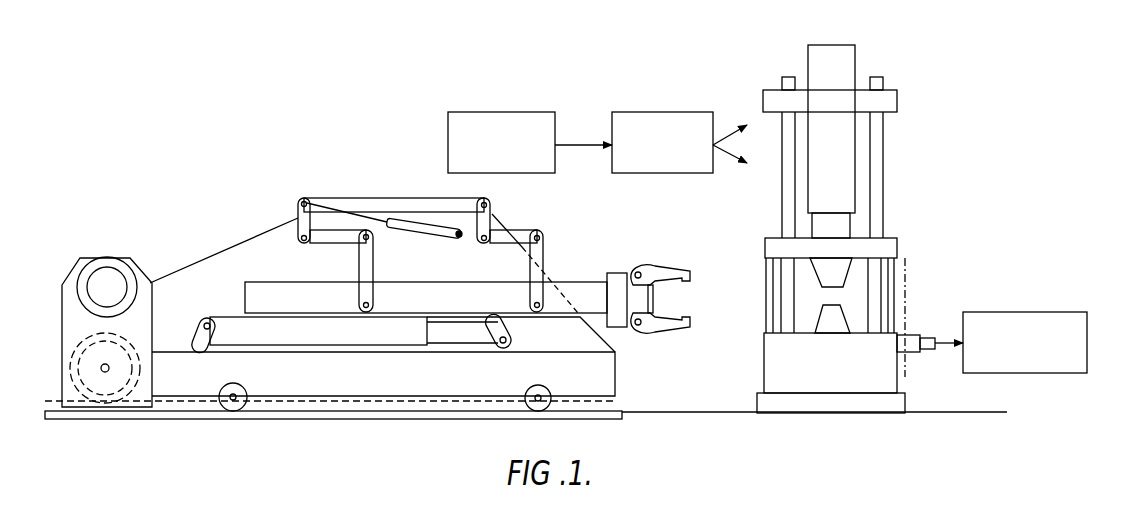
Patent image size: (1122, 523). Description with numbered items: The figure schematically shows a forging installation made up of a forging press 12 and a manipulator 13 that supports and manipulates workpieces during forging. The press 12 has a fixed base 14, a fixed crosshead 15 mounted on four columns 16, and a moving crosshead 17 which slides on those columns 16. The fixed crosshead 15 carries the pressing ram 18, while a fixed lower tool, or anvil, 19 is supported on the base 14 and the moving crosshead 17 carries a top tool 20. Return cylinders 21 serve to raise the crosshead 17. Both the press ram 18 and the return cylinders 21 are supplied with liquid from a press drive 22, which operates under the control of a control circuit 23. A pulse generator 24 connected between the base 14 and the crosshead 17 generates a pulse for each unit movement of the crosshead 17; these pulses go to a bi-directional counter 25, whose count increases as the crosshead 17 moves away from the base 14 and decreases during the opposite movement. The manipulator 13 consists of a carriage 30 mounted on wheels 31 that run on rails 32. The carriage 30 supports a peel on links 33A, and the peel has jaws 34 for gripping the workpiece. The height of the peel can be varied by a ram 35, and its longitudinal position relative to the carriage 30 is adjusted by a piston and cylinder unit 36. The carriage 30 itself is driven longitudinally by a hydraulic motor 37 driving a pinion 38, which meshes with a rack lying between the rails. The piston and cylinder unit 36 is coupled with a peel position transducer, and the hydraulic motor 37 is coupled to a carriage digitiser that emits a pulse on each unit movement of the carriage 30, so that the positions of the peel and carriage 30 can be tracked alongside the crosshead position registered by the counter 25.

The forging press 12 is at (823, 449).
The manipulator 13 is at (333, 432).
The fixed base 14 is at (823, 369).
The fixed crosshead 15 is at (892, 102).
The columns 16 is at (878, 172).
The moving crosshead 17 is at (892, 242).
The pressing ram 18 is at (820, 172).
The fixed lower tool 19 is at (822, 325).
The top tool 20 is at (822, 281).
The return cylinders 21 is at (766, 303).
The press drive 22 is at (663, 112).
The control circuit 23 is at (510, 112).
The pulse generator 24 is at (910, 338).
The bi-directional counter 25 is at (1027, 375).
The carriage 30 is at (600, 372).
The wheels 31 is at (232, 411).
The rails 32 is at (355, 419).
The links 33A is at (332, 238).
The jaws 34 is at (663, 273).
The ram 35 is at (422, 230).
The piston and cylinder unit 36 is at (235, 328).
The hydraulic motor 37 is at (118, 287).
The pinion 38 is at (75, 399).